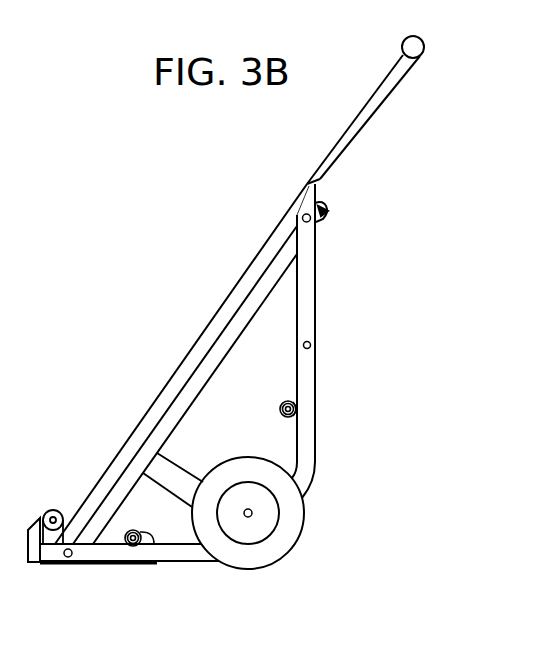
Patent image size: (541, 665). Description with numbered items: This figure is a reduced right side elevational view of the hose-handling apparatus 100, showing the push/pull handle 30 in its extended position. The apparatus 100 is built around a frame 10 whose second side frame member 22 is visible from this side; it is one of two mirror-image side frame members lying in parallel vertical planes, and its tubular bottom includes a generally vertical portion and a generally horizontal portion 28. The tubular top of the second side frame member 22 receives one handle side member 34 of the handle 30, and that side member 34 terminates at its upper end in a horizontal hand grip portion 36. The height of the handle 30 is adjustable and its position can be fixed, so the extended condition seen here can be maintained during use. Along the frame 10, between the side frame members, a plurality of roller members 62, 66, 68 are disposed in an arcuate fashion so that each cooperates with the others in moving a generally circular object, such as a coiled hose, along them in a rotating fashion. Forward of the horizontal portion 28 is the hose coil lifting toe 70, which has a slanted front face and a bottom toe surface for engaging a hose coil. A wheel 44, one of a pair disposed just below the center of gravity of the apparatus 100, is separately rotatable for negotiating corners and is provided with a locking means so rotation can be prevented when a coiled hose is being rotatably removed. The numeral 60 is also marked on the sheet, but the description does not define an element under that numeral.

The apparatus 100 is at (130, 275).
The frame 10 is at (168, 386).
The second side frame member 22 is at (312, 286).
The generally horizontal portion 28 is at (180, 553).
The push/pull handle 30 is at (415, 36).
The handle side member 34 is at (343, 152).
The horizontal hand grip portion 36 is at (421, 51).
The wheel 44 is at (288, 530).
The support member 60 is at (9, 98).
The roller member 62 is at (280, 409).
The roller member 66 is at (153, 547).
The roller member 68 is at (48, 511).
The hose coil lifting toe 70 is at (28, 545).